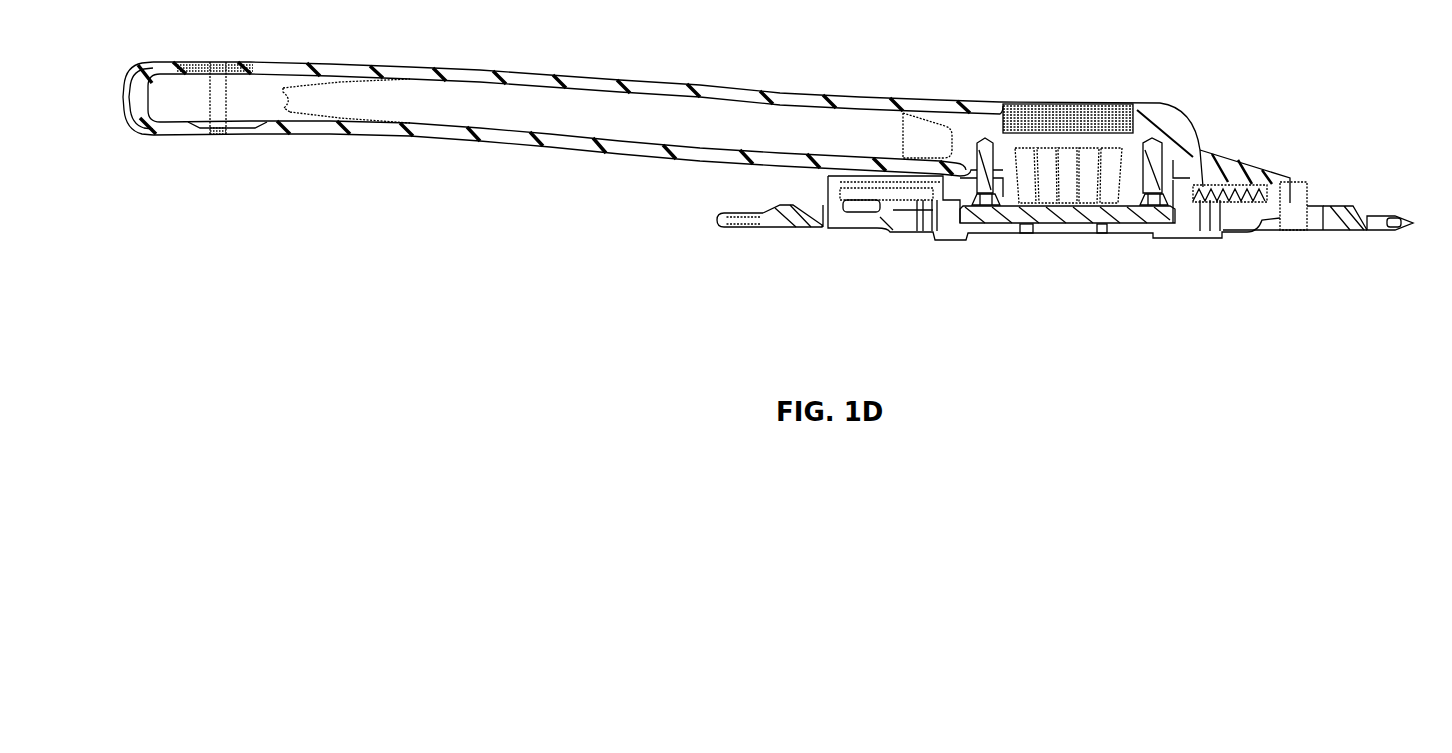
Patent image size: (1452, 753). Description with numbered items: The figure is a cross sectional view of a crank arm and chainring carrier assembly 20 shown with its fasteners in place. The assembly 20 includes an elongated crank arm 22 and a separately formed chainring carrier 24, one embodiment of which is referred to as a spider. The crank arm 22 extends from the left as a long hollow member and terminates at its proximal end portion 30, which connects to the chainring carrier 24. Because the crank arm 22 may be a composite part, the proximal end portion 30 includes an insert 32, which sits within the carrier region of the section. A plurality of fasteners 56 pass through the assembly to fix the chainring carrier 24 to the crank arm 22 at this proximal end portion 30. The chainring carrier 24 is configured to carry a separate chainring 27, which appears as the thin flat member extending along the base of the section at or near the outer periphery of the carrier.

The crank arm and chainring carrier assembly 20 is at (969, 242).
The crank arm 22 is at (796, 94).
The chainring carrier 24 is at (1187, 212).
The chainring 27 is at (726, 232).
The proximal end portion 30 is at (1161, 101).
The insert 32 is at (1068, 183).
The fasteners 56 is at (983, 138).